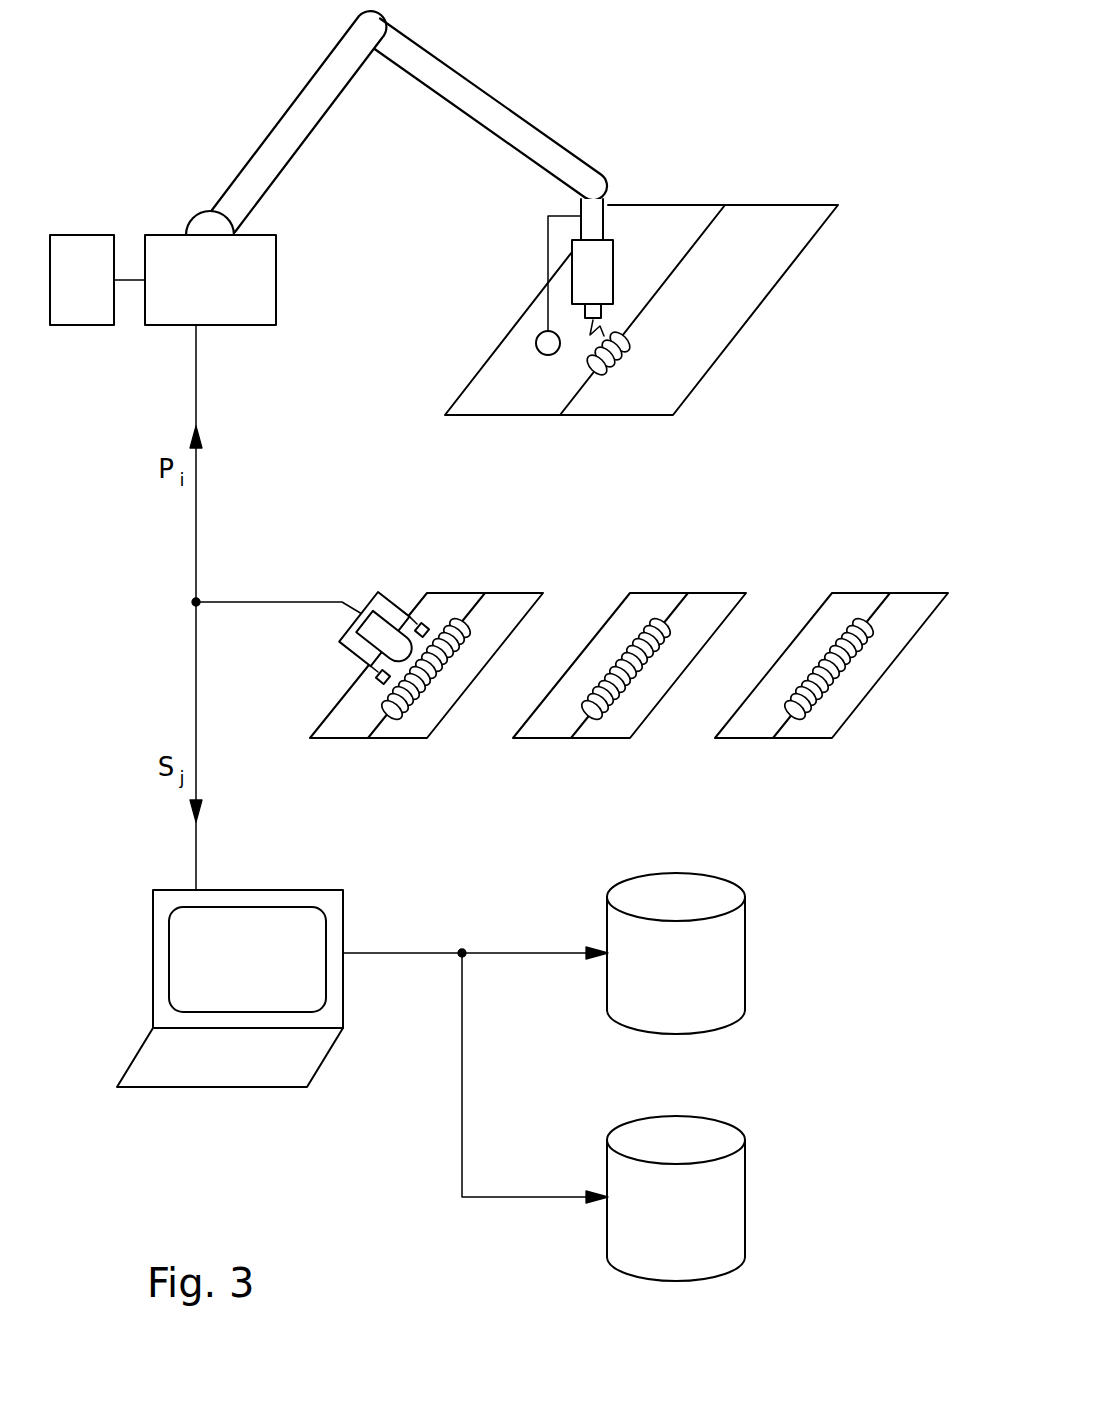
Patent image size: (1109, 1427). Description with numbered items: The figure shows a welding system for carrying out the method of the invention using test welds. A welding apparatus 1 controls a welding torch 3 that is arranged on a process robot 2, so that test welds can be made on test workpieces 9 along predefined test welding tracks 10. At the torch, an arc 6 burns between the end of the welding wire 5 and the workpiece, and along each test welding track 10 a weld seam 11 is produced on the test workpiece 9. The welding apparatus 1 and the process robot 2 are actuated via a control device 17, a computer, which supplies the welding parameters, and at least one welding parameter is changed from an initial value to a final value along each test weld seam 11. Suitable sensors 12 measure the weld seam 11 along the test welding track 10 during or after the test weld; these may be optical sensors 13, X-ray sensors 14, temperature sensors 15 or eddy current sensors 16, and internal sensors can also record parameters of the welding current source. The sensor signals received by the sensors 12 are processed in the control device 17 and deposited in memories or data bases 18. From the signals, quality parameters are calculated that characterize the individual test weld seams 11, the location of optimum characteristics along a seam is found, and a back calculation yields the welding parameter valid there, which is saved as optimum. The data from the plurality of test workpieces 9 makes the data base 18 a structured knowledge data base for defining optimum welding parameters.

The welding apparatus 1 is at (86, 235).
The process robot 2 is at (245, 192).
The welding torch 3 is at (592, 262).
The welding wire 5 is at (598, 328).
The arc 6 is at (622, 338).
The test workpiece 9 is at (778, 228).
The test welding track 10 is at (702, 238).
The weld seam 11 is at (612, 363).
The sensor 12 is at (496, 285).
The temperature sensor 15 is at (546, 340).
The optical sensor 13 is at (378, 630).
The X-ray sensor 14 is at (424, 625).
The eddy current sensor 16 is at (375, 679).
The control device 17 is at (217, 1040).
The data base 18 is at (747, 977).